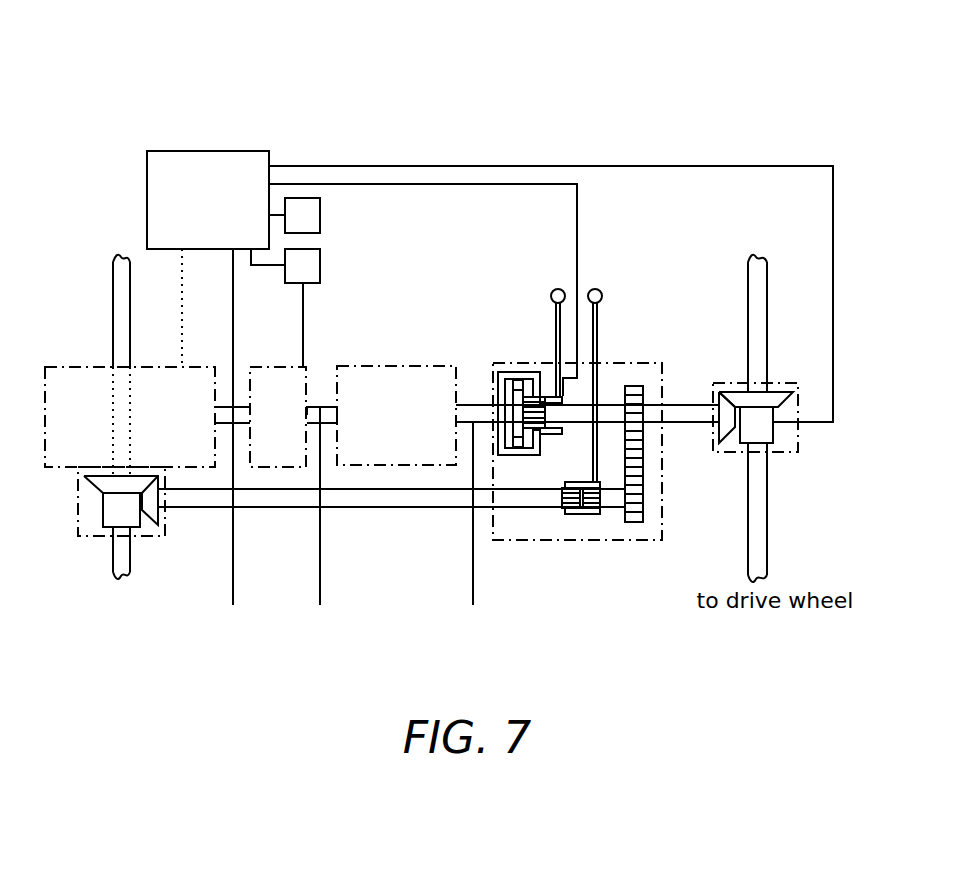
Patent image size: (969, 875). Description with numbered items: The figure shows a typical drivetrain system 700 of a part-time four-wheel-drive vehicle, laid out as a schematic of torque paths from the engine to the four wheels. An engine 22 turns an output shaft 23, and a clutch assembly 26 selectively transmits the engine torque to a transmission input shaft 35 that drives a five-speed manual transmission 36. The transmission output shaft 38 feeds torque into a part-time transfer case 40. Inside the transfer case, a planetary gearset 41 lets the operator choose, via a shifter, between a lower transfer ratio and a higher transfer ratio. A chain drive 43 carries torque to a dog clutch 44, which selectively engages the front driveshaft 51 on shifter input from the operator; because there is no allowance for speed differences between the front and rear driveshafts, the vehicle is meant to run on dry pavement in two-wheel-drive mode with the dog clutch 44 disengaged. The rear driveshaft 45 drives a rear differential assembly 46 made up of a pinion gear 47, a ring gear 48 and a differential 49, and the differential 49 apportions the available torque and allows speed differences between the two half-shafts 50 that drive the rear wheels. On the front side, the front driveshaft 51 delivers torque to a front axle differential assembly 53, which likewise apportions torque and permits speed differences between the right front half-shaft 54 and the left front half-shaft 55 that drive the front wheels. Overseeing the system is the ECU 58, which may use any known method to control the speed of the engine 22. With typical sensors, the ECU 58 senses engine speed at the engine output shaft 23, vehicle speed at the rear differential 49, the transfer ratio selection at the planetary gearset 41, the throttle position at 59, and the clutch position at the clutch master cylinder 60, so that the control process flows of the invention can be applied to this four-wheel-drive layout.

The drivetrain system 700 is at (481, 34).
The ECU 58 is at (490, 273).
The throttle position 59 is at (294, 215).
The clutch master cylinder 60 is at (285, 308).
The engine 22 is at (130, 417).
The output shaft 23 is at (232, 441).
The clutch assembly 26 is at (278, 417).
The transmission input shaft 35 is at (322, 520).
The five-speed manual transmission 36 is at (396, 415).
The transmission output shaft 38 is at (587, 519).
The part-time transfer case 40 is at (576, 414).
The planetary gearset 41 is at (519, 426).
The chain drive 43 is at (636, 522).
The dog clutch 44 is at (589, 514).
The rear driveshaft 45 is at (681, 428).
The rear differential assembly 46 is at (769, 430).
The pinion gear 47 is at (721, 404).
The ring gear 48 is at (740, 397).
The differential 49 is at (756, 425).
The half-shafts 50 is at (773, 418).
The front driveshaft 51 is at (391, 511).
The front axle differential assembly 53 is at (105, 501).
The right front half-shaft 54 is at (106, 553).
The left front half-shaft 55 is at (105, 365).